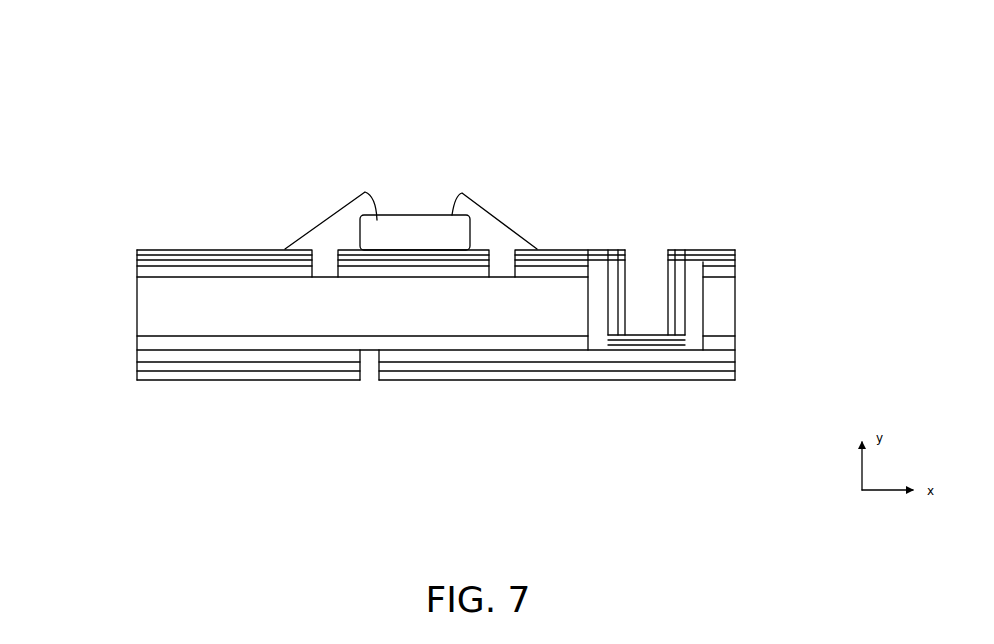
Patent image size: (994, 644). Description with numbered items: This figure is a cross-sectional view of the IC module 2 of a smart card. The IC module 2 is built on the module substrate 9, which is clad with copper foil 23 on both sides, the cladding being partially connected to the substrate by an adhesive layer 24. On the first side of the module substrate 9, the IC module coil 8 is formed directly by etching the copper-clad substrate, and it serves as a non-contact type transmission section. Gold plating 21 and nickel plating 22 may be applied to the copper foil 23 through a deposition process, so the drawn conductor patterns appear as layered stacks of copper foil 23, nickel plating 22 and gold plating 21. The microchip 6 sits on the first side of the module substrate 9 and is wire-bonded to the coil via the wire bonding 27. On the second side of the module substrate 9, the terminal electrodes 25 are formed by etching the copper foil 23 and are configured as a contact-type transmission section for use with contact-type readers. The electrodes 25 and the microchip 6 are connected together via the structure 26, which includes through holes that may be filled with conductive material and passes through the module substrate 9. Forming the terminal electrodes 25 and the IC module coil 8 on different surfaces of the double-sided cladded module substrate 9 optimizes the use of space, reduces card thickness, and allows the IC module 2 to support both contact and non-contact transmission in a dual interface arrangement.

The IC module 2 is at (774, 159).
The microchip 6 is at (415, 233).
The IC module coil 8 is at (200, 248).
The module substrate 9 is at (160, 313).
The gold plating 21 is at (237, 258).
The nickel plating 22 is at (147, 250).
The copper foil 23 is at (266, 272).
The adhesive layer 24 is at (160, 343).
The terminal electrodes 25 is at (444, 388).
The structure 26 is at (633, 253).
The wire bonding 27 is at (366, 192).